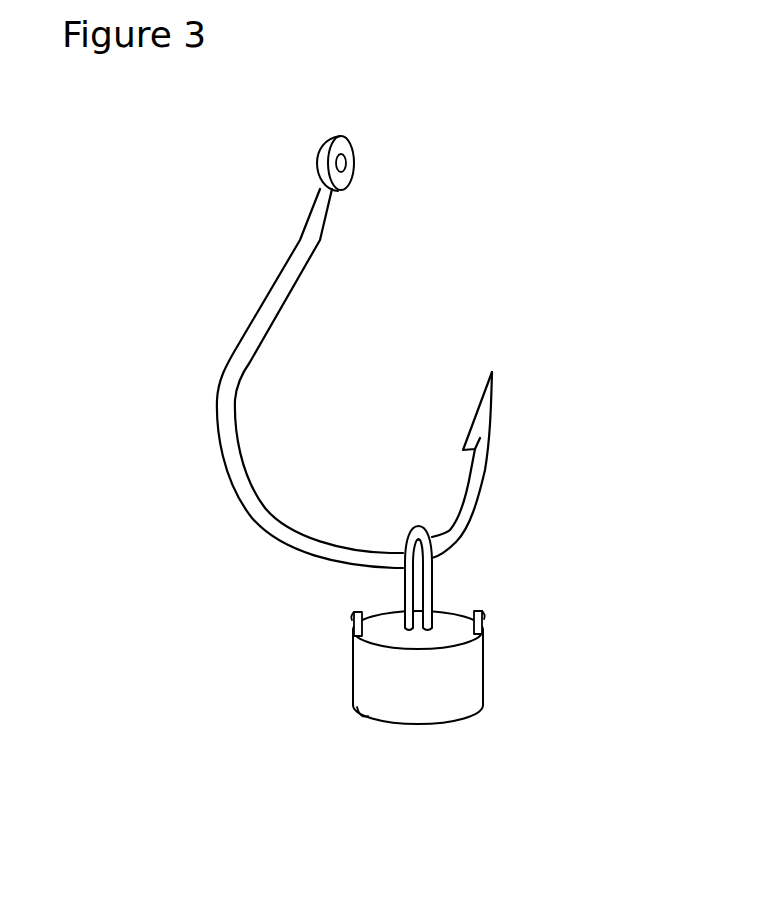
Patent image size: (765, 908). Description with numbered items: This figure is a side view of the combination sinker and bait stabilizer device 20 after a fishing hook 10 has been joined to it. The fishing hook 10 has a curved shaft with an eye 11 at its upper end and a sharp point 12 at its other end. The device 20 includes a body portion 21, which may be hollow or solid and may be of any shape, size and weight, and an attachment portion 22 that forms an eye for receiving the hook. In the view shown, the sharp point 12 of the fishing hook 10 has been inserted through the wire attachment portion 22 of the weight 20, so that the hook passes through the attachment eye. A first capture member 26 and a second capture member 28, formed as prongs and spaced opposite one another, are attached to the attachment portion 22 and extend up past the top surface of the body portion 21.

The fishing hook 10 is at (349, 352).
The eye 11 is at (346, 163).
The sharp point 12 is at (480, 430).
The device 20 is at (380, 628).
The body portion 21 is at (460, 694).
The attachment portion 22 is at (435, 583).
The first capture member 26 is at (485, 610).
The second capture member 28 is at (353, 615).